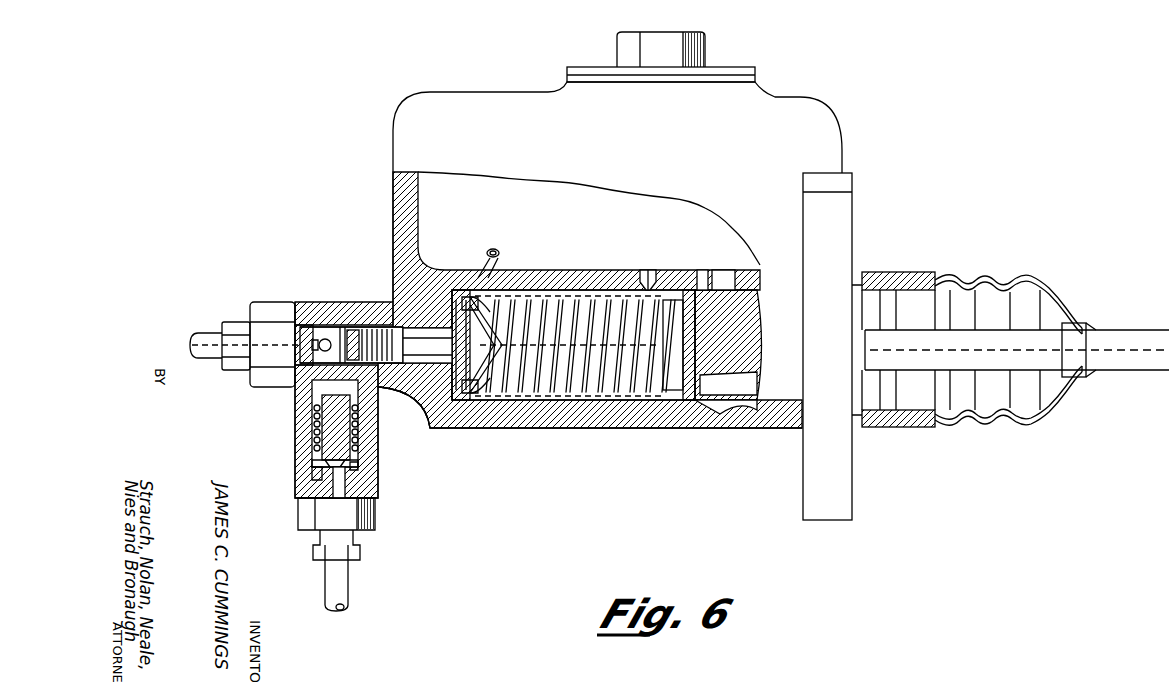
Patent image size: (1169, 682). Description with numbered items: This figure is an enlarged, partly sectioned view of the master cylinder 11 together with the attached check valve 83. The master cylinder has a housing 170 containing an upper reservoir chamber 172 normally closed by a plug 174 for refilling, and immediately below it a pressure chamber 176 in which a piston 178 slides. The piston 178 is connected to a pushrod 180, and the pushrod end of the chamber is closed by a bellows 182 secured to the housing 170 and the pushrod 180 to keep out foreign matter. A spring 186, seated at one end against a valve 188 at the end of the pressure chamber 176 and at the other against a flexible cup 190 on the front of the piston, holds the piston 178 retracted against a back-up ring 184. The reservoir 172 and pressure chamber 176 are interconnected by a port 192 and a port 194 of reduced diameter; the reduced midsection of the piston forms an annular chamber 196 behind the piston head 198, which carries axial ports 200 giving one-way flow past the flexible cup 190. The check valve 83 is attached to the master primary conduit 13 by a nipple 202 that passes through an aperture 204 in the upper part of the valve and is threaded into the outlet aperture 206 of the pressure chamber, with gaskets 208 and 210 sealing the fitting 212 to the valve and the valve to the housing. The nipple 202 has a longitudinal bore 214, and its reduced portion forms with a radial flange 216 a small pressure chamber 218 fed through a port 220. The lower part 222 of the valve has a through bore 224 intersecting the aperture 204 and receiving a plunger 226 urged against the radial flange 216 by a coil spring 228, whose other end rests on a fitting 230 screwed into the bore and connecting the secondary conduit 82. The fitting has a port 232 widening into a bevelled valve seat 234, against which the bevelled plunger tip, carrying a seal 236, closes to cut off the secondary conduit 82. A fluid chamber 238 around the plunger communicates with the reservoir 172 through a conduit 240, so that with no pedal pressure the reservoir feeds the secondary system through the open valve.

The master cylinder 11 is at (624, 255).
The master primary conduit 13 is at (203, 340).
The secondary conduit 82 is at (345, 583).
The check valve 83 is at (292, 413).
The housing 170 is at (853, 214).
The reservoir chamber 172 is at (525, 220).
The plug 174 is at (756, 74).
The pressure chamber 176 is at (538, 400).
The piston 178 is at (740, 345).
The pushrod 180 is at (1105, 335).
The bellows 182 is at (1027, 280).
The back-up ring 184 is at (885, 260).
The spring 186 is at (546, 290).
The valve 188 is at (470, 400).
The flexible cup 190 is at (668, 402).
The port 192 is at (702, 270).
The port of reduced diameter 194 is at (648, 270).
The annular chamber 196 is at (738, 290).
The piston head 198 is at (752, 382).
The axial ports 200 is at (716, 410).
The nipple 202 is at (448, 292).
The aperture 204 is at (312, 300).
The threaded outlet aperture 206 is at (405, 407).
The gasket 208 is at (300, 302).
The gasket 210 is at (385, 326).
The fitting 212 is at (252, 302).
The bore 214 is at (400, 360).
The radial flange 216 is at (350, 328).
The pressure chamber 218 is at (326, 338).
The port 220 is at (320, 347).
The lower part 222 is at (310, 466).
The through bore 224 is at (312, 432).
The plunger 226 is at (335, 422).
The coil spring 228 is at (352, 440).
The fitting 230 is at (360, 545).
The port 232 is at (345, 488).
The bevelled valve seat 234 is at (360, 465).
The seal 236 is at (315, 478).
The fluid chamber 238 is at (308, 450).
The conduit 240 is at (497, 250).